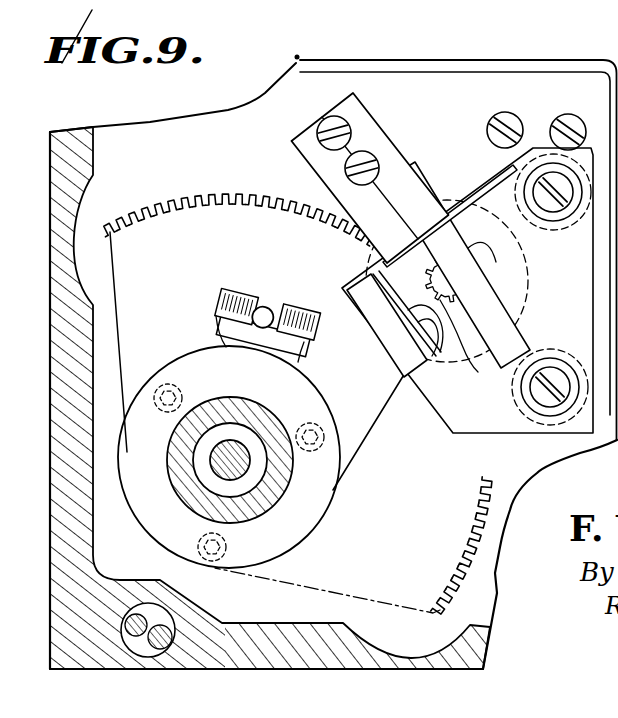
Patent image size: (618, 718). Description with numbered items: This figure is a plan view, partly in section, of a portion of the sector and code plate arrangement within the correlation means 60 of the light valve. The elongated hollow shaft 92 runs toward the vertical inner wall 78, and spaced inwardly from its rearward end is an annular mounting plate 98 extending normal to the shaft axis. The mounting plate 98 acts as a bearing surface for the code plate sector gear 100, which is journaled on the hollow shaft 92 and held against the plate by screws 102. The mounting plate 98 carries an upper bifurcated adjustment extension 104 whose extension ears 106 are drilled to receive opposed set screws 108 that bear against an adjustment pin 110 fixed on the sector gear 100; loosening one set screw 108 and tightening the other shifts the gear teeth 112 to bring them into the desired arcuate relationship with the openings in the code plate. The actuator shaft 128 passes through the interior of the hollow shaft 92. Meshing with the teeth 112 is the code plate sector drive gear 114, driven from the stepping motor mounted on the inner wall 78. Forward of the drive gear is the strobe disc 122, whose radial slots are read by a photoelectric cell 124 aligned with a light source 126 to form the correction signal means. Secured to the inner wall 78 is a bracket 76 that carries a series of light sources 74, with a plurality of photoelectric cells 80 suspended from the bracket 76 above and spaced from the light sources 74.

The correlation means 60 is at (466, 100).
The vertical inner wall 78 is at (549, 88).
The photoelectric cell 124 is at (362, 128).
The light source 126 is at (408, 158).
The strobe disc 122 is at (446, 205).
The code plate sector drive gear 114 is at (512, 291).
The photoelectric cells 80 is at (500, 323).
The light sources 74 is at (449, 370).
The bracket 76 is at (497, 418).
The gear teeth 112 is at (185, 203).
The code plate sector gear 100 is at (148, 238).
The extension ears 106 is at (308, 316).
The adjustment pin 110 is at (264, 306).
The set screws 108 is at (216, 315).
The upper bifurcated adjustment extension 104 is at (228, 331).
The screws 102 is at (170, 384).
The actuator shaft 128 is at (240, 463).
The elongated hollow shaft 92 is at (262, 503).
The annular mounting plate 98 is at (175, 536).